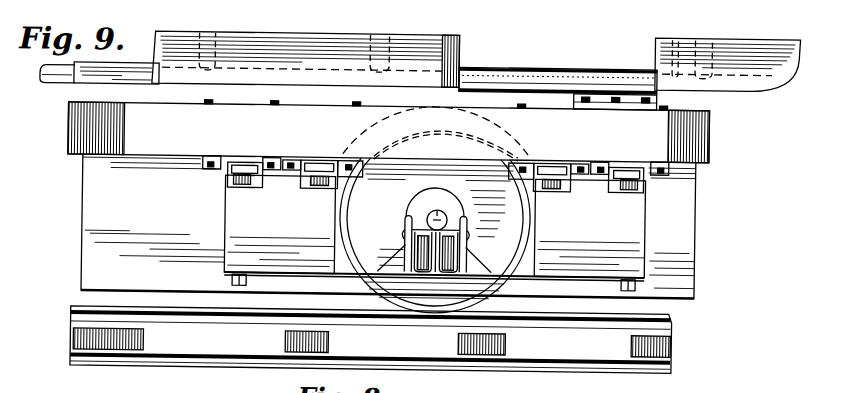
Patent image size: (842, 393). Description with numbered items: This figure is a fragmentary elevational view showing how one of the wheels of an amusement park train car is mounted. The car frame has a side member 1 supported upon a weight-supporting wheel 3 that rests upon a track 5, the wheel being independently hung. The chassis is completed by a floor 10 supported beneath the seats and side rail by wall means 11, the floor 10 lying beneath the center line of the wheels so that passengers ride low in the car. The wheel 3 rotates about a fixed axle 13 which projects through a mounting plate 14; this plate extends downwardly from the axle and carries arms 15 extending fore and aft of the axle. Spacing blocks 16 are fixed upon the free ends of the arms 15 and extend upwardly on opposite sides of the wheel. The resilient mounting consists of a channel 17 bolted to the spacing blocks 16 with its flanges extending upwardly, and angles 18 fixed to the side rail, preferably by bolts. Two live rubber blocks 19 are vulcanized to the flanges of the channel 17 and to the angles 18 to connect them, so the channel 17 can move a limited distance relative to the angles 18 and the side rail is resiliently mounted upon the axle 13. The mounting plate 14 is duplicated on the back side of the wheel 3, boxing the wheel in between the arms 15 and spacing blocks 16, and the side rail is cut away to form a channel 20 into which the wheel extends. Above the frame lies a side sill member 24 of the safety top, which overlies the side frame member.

The side member 1 is at (700, 129).
The weight-supporting wheel 3 is at (378, 225).
The track 5 is at (672, 342).
The floor 10 is at (205, 296).
The wall means 11 is at (680, 230).
The fixed axle 13 is at (435, 217).
The mounting plate 14 is at (457, 210).
The arm 15 is at (272, 268).
The spacing block 16 is at (235, 218).
The channel 17 is at (228, 181).
The angle 18 is at (210, 158).
The live rubber block 19 is at (258, 166).
The channel 20 is at (500, 146).
The side sill member 24 is at (508, 56).